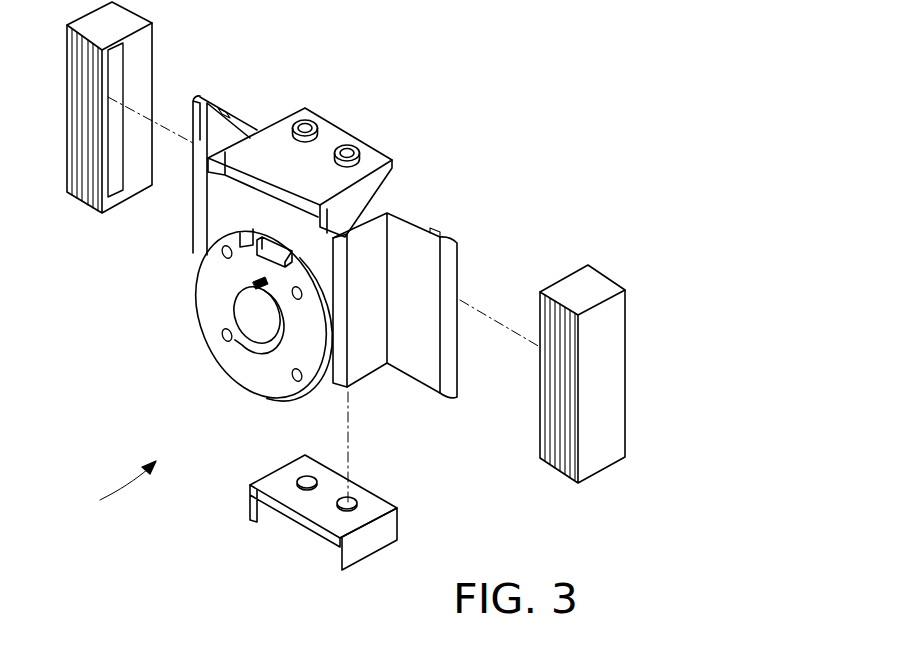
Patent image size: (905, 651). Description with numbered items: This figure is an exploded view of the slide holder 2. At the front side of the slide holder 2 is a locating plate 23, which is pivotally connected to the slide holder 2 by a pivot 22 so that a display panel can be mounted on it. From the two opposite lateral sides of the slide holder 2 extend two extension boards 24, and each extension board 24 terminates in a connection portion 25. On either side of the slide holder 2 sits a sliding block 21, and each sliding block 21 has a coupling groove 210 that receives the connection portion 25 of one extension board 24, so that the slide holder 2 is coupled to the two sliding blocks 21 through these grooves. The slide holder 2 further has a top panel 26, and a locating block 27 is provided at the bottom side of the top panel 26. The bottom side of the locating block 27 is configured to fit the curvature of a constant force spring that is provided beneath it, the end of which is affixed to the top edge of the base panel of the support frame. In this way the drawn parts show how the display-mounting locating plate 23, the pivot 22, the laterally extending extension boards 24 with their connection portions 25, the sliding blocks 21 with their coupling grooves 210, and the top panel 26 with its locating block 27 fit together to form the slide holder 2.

The slide holder 2 is at (311, 306).
The sliding block 21 is at (140, 65).
The coupling groove 210 is at (117, 160).
The pivot 22 is at (250, 312).
The locating plate 23 is at (257, 373).
The extension board 24 is at (227, 135).
The connection portion 25 is at (210, 102).
The top panel 26 is at (333, 135).
The locating block 27 is at (317, 507).